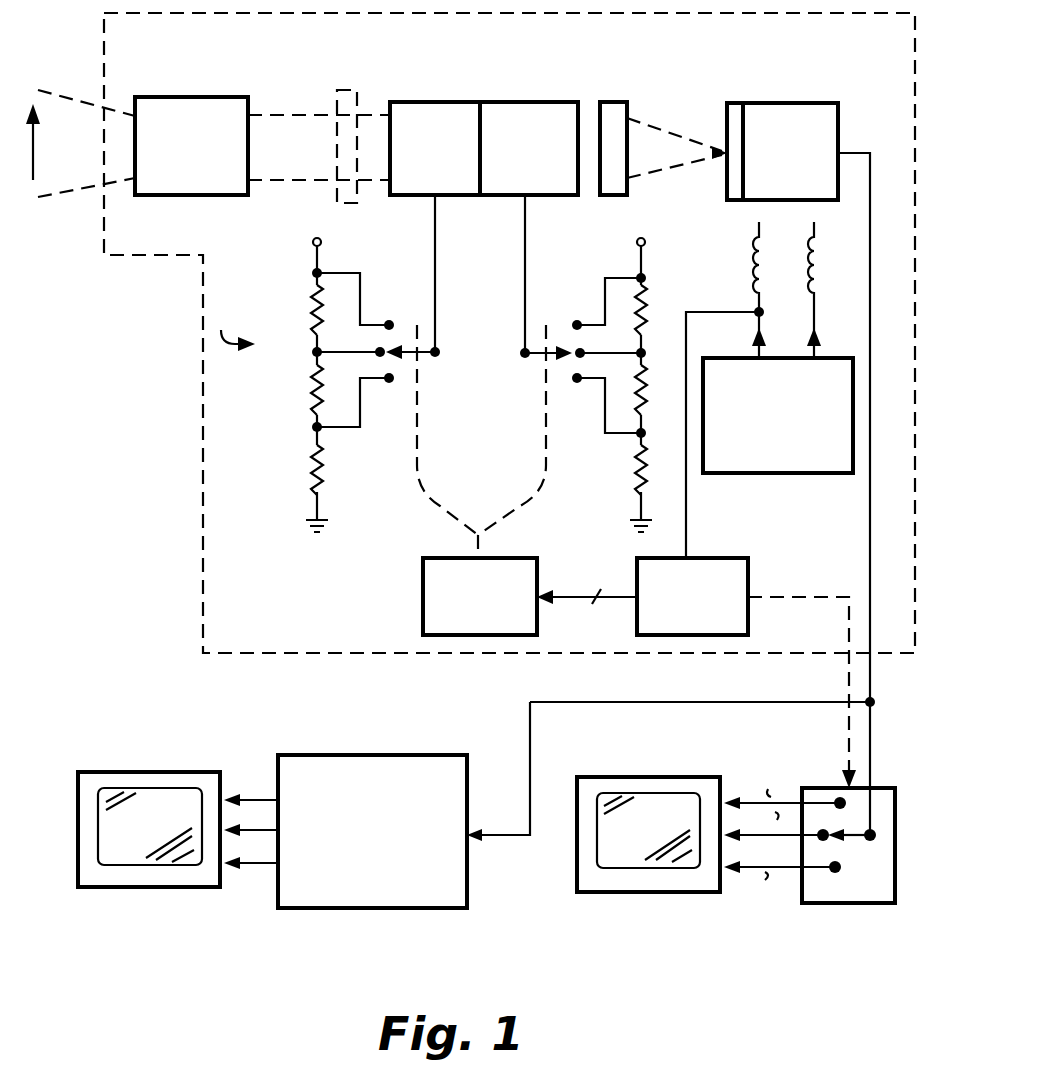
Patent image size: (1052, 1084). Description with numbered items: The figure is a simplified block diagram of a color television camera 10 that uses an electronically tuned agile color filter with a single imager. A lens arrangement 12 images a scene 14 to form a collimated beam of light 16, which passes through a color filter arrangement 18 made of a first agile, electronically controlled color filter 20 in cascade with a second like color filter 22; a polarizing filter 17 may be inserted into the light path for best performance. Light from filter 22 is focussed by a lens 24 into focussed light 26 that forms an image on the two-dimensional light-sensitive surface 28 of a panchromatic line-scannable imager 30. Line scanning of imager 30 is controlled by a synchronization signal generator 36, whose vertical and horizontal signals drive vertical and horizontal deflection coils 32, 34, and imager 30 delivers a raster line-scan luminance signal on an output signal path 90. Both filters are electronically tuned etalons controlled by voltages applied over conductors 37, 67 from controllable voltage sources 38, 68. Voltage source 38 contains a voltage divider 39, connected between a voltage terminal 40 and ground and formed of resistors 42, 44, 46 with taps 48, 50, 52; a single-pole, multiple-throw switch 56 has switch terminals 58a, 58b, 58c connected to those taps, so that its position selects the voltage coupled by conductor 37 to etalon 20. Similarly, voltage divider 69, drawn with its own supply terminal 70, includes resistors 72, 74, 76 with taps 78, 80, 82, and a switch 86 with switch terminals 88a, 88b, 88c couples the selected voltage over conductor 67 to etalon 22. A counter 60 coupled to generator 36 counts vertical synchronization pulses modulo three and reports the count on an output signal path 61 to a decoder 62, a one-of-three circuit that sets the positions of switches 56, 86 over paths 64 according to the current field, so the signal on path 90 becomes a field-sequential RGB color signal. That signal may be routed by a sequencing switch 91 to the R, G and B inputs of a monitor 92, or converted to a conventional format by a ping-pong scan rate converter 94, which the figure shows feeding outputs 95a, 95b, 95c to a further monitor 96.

The television camera 10 is at (201, 595).
The lens arrangement 12 is at (194, 97).
The scene 14 is at (34, 160).
The collimated beam of light 16 is at (298, 111).
The polarizing filter 17 is at (350, 91).
The color filter arrangement 18 is at (494, 70).
The first color filter 20 is at (444, 100).
The second color filter 22 is at (542, 100).
The lens 24 is at (616, 100).
The focussed light 26 is at (672, 131).
The light-sensitive surface 28 is at (739, 100).
The imager 30 is at (799, 100).
The vertical deflection coil 32 is at (765, 270).
The horizontal deflection coil 34 is at (820, 270).
The synchronization signal generator 36 is at (800, 474).
The conductor 37 is at (437, 240).
The controllable voltage source 38 is at (282, 238).
The voltage divider 39 is at (231, 320).
The voltage terminal 40 is at (321, 240).
The resistor 42 is at (309, 320).
The resistor 44 is at (309, 393).
The resistor 46 is at (309, 460).
The tap 48 is at (312, 274).
The tap 50 is at (312, 356).
The tap 52 is at (320, 432).
The switch 56 is at (436, 360).
The switch terminal 58a is at (391, 318).
The switch terminal 58b is at (368, 346).
The switch terminal 58c is at (389, 384).
The counter 60 is at (735, 558).
The output signal path 61 is at (580, 596).
The decoder 62 is at (423, 599).
The paths 64 is at (532, 487).
The conductor 67 is at (527, 240).
The controllable voltage source 68 is at (702, 238).
The voltage divider 69 is at (708, 290).
The supply terminal 70 is at (636, 240).
The resistor 72 is at (648, 312).
The resistor 74 is at (648, 406).
The resistor 76 is at (634, 472).
The tap 78 is at (645, 276).
The tap 80 is at (646, 358).
The tap 82 is at (646, 436).
The switch 86 is at (526, 360).
The switch terminal 88a is at (575, 320).
The switch terminal 88b is at (570, 348).
The switch terminal 88c is at (578, 384).
The output signal path 90 is at (868, 567).
The sequencing switch 91 is at (845, 904).
The monitor 92 is at (650, 893).
The scan rate converter 94 is at (385, 909).
The red output 95a is at (253, 796).
The green output 95b is at (248, 836).
The blue output 95c is at (268, 868).
The color monitor 96 is at (158, 888).